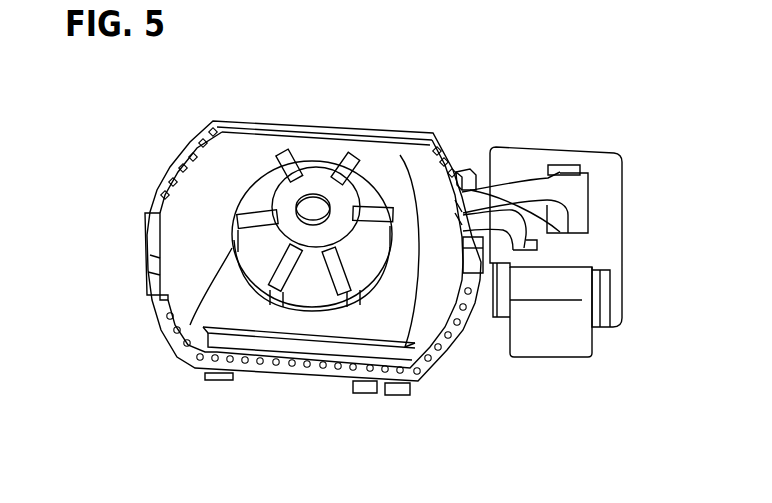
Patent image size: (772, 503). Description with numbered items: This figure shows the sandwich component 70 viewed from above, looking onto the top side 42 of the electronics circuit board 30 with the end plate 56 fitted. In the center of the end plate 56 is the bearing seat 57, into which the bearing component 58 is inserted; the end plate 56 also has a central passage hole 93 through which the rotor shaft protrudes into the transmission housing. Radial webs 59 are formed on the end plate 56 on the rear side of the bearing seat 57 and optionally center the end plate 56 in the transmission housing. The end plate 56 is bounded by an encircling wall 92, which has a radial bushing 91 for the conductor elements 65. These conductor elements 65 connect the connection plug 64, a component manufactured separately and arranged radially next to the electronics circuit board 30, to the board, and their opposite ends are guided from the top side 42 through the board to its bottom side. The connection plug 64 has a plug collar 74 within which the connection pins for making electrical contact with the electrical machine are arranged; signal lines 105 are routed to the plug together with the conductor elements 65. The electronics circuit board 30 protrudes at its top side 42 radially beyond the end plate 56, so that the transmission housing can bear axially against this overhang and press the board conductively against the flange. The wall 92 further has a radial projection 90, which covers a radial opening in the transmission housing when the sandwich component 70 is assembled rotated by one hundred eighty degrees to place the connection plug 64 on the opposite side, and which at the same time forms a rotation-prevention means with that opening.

The sandwich component 70 is at (164, 159).
The radial webs 59 is at (285, 152).
The bearing component 58 is at (310, 198).
The end plate 56 is at (405, 170).
The radial bushing 91 is at (464, 170).
The conductor elements 65 is at (522, 195).
The connection plug 64 is at (573, 257).
The plug collar 74 is at (573, 342).
The radial projection 90 is at (147, 237).
The central passage hole 93 is at (167, 323).
The encircling wall 92 is at (220, 368).
The bearing seat 57 is at (315, 242).
The electronics circuit board 30 is at (347, 367).
The top side 42 is at (444, 352).
The signal lines 105 is at (520, 250).